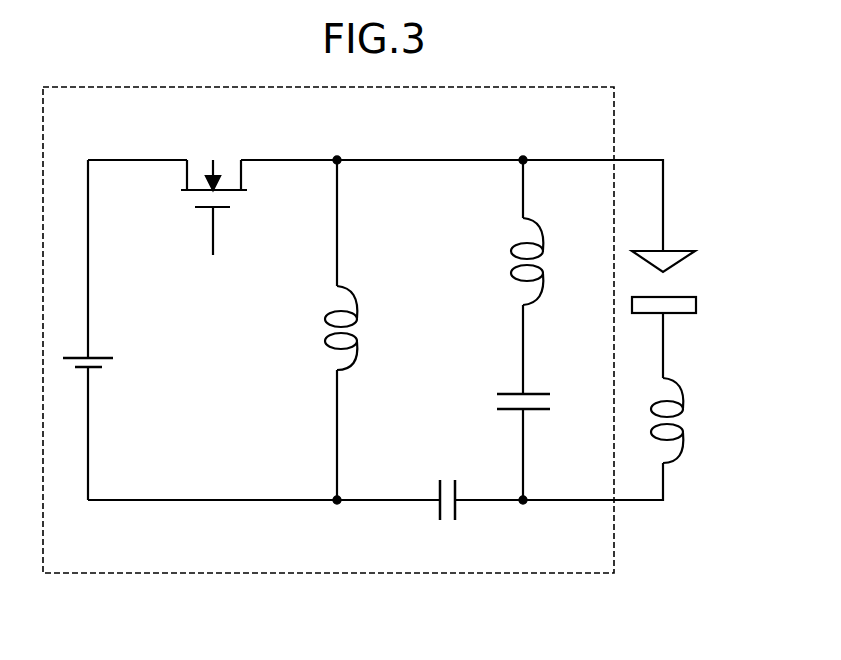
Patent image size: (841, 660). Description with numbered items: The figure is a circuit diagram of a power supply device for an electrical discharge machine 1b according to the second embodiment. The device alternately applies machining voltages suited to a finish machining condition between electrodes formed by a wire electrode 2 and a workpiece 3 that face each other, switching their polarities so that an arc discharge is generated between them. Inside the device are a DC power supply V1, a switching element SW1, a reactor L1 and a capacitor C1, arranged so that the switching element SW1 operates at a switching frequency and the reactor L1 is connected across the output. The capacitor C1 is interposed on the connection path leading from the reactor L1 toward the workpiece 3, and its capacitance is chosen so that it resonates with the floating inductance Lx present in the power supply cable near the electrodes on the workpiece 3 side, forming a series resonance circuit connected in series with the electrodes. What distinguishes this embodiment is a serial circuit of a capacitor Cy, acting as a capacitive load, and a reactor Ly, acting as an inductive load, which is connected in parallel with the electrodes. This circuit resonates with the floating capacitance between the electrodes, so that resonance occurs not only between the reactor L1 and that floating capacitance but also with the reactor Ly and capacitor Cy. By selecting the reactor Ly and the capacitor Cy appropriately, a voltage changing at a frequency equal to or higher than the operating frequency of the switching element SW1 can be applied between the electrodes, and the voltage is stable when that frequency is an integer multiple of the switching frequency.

The power supply device for an electrical discharge machine 1b is at (212, 575).
The switching element SW1 is at (222, 159).
The DC power supply V1 is at (100, 356).
The reactor L1 is at (325, 316).
The reactor Ly is at (511, 250).
The capacitor Cy is at (511, 393).
The capacitor C1 is at (438, 507).
The wire electrode 2 is at (675, 250).
The workpiece 3 is at (697, 304).
The floating inductance Lx is at (686, 415).